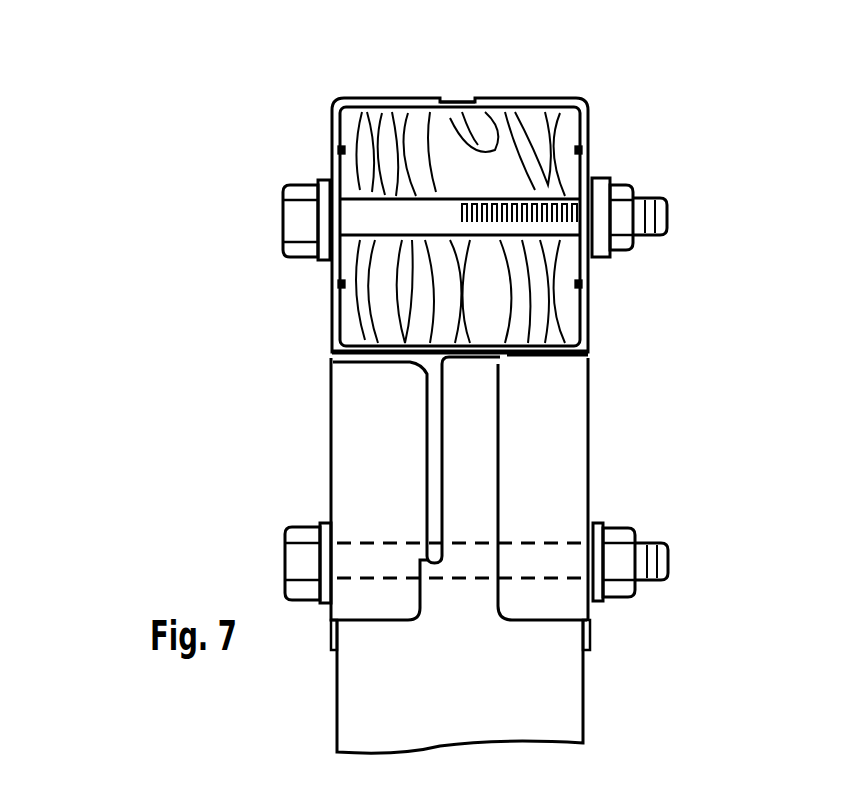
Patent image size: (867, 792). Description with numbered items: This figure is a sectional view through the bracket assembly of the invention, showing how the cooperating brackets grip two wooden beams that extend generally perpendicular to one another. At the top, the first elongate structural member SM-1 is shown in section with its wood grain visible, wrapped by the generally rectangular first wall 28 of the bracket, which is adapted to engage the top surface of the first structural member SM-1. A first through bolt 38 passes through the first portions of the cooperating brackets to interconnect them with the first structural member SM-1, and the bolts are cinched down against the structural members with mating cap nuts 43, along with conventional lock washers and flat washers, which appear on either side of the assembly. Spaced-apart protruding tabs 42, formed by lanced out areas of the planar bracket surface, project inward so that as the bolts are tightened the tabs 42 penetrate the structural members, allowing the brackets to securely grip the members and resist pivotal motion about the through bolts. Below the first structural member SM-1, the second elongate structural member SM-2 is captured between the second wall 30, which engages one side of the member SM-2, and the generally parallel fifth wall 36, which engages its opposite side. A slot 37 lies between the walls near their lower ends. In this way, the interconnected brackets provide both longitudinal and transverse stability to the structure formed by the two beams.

The first wall 28 is at (395, 98).
The first through bolt 38 is at (408, 214).
The protruding tabs 42 is at (332, 150).
The cap nuts 43 is at (627, 187).
The second wall 30 is at (360, 455).
The fifth wall 36 is at (553, 470).
The slot 37 is at (443, 568).
The first elongate structural member SM-1 is at (540, 147).
The second elongate structural member SM-2 is at (542, 697).